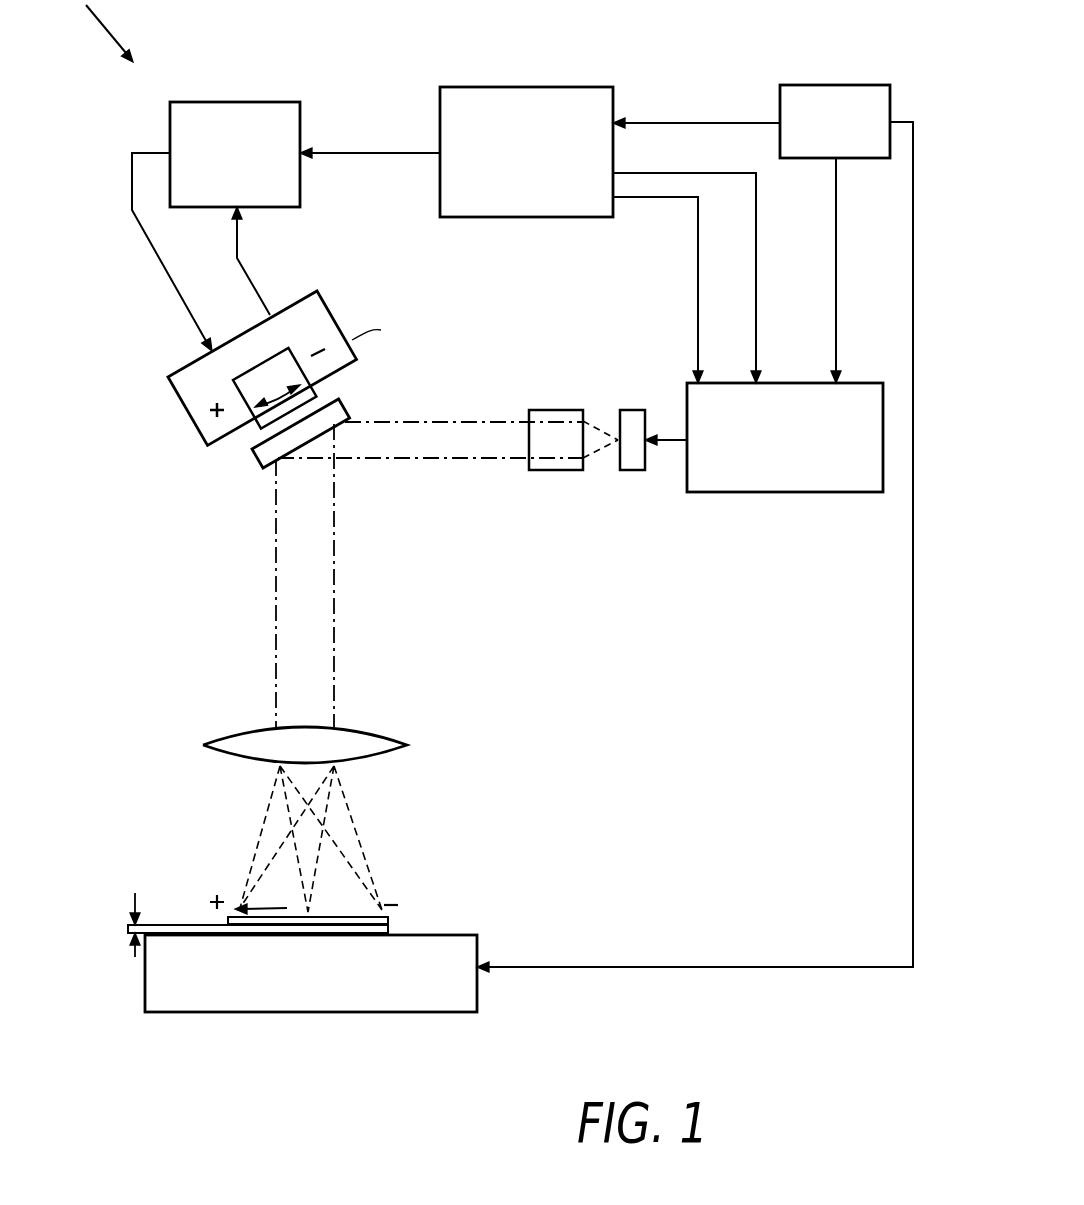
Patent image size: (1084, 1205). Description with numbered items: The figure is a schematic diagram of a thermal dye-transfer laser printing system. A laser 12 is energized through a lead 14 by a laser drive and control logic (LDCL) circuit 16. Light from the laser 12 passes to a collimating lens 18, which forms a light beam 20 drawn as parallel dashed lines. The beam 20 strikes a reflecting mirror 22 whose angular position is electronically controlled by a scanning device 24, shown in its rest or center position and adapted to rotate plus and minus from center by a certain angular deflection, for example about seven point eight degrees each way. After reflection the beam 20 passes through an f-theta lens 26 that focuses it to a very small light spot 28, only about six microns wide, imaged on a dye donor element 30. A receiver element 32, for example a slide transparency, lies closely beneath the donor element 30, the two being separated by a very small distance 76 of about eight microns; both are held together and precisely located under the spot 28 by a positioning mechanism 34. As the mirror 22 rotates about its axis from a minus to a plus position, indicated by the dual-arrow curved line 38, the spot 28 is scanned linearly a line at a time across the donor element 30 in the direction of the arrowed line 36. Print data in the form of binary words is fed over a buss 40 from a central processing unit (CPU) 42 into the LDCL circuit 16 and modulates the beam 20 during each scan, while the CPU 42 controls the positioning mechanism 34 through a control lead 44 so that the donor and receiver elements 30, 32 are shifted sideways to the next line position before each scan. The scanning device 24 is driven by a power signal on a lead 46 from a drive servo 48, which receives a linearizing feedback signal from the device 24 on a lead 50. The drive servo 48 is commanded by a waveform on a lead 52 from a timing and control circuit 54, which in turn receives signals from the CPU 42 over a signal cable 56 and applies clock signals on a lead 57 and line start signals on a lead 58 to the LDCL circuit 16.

The laser 12 is at (630, 410).
The lead 14 is at (662, 432).
The laser drive and control logic (LDCL) circuit 16 is at (783, 492).
The collimating lens 18 is at (540, 410).
The light beam 20 is at (492, 462).
The reflecting mirror 22 is at (258, 462).
The scanning device 24 is at (333, 300).
The f-Θ lens 26 is at (407, 745).
The light spot 28 is at (312, 910).
The dye donor element 30 is at (390, 906).
The receiver element 32 is at (390, 920).
The positioning mechanism 34 is at (477, 937).
The arrowed line 36 is at (258, 907).
The dual-arrow curved line 38 is at (305, 395).
The buss 40 is at (836, 272).
The central processing unit (CPU) 42 is at (852, 85).
The control lead 44 is at (913, 262).
The lead 46 is at (180, 295).
The drive servo 48 is at (195, 102).
The lead 50 is at (250, 280).
The lead 52 is at (392, 153).
The timing and control circuit 54 is at (468, 87).
The signal cable 56 is at (713, 123).
The lead 57 is at (698, 285).
The lead 58 is at (756, 262).
The distance 76 is at (114, 919).